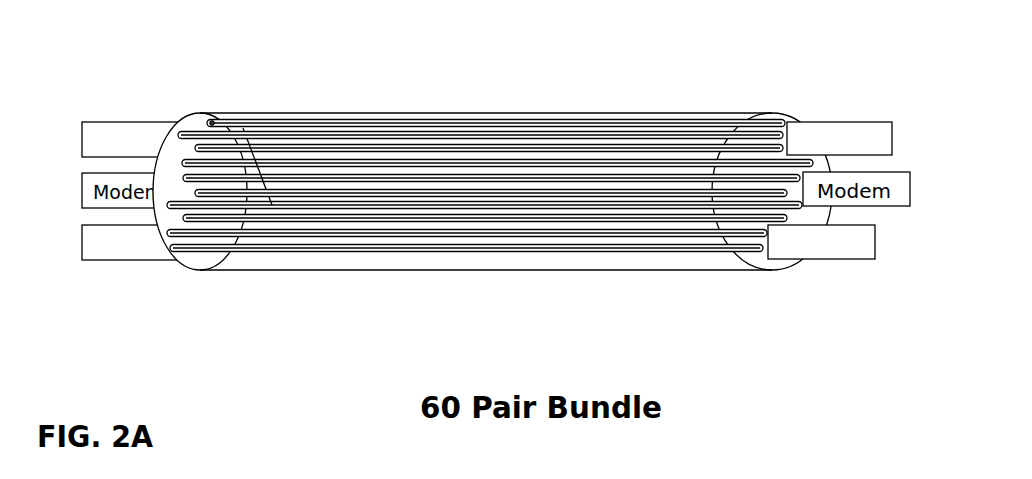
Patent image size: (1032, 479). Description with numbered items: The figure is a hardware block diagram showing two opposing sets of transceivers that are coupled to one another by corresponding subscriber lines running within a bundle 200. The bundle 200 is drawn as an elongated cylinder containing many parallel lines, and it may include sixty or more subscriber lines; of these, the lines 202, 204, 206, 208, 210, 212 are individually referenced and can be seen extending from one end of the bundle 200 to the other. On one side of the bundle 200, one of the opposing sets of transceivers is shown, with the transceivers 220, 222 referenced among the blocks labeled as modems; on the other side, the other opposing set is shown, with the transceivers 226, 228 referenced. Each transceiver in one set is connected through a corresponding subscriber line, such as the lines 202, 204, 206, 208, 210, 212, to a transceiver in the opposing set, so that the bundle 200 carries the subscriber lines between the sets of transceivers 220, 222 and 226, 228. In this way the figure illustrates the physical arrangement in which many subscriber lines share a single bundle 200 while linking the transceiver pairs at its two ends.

The bundle 200 is at (514, 102).
The subscriber line 202 is at (290, 121).
The subscriber line 204 is at (327, 136).
The subscriber line 206 is at (280, 227).
The subscriber line 208 is at (297, 227).
The subscriber line 210 is at (400, 243).
The subscriber line 212 is at (763, 193).
The transceiver 220 is at (132, 122).
The transceiver 222 is at (146, 262).
The transceiver 226 is at (847, 122).
The transceiver 228 is at (830, 259).